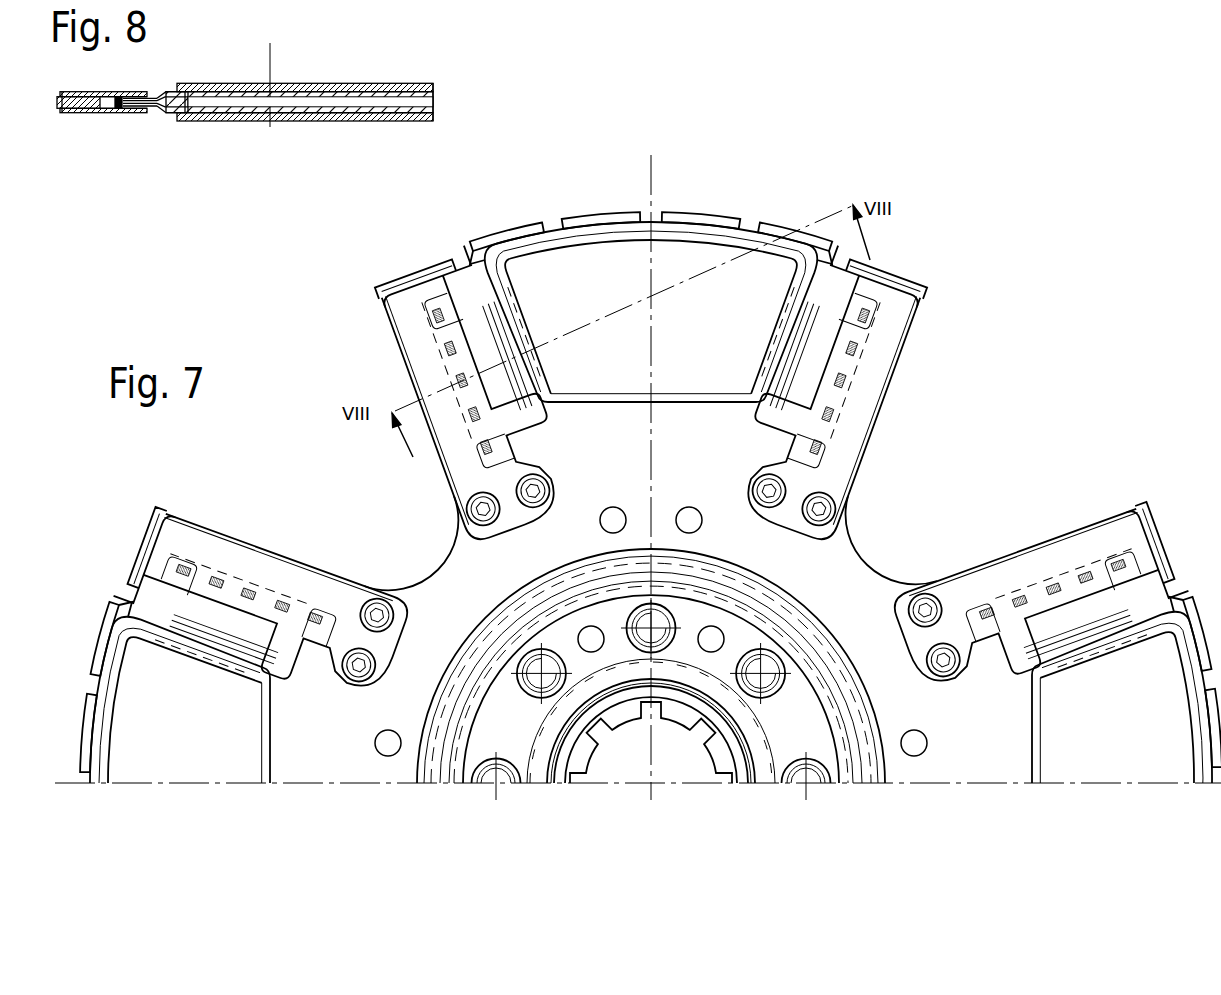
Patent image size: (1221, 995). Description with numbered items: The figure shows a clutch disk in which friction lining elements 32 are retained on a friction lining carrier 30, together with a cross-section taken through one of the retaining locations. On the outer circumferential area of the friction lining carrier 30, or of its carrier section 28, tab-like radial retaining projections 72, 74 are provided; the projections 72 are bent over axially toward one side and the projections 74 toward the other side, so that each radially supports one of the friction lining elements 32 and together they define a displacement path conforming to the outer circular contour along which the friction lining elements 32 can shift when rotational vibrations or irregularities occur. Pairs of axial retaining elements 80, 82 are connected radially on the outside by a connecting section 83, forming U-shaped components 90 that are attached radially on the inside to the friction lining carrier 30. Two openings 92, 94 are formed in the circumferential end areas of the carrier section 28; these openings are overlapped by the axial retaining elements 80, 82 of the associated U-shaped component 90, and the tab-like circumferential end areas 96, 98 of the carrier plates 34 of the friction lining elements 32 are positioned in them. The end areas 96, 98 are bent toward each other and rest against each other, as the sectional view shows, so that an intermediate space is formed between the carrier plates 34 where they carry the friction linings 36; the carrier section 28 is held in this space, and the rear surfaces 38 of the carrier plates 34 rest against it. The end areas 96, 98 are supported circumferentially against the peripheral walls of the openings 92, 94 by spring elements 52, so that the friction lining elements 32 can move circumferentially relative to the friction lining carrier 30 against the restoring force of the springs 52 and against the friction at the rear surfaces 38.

In FIG. 8, the carrier section 28 is at (425, 100).
In FIG. 7, the carrier section 28 is at (700, 412).
In FIG. 7, the friction lining carrier 30 is at (860, 545).
In FIG. 8, the friction lining elements 32 is at (333, 82).
In FIG. 8, the carrier plates 34 is at (166, 90).
In FIG. 7, the carrier plates 34 is at (500, 262).
In FIG. 8, the friction linings 36 is at (239, 84).
In FIG. 8, the rear surfaces 38 is at (393, 120).
In FIG. 7, the spring elements 52 is at (448, 330).
In FIG. 7, the radial retaining projections 72 is at (765, 226).
In FIG. 7, the radial retaining projections 74 is at (694, 212).
In FIG. 8, the axial retaining elements 80 is at (90, 112).
In FIG. 7, the axial retaining elements 80 is at (420, 375).
In FIG. 8, the axial retaining elements 82 is at (108, 92).
In FIG. 7, the axial retaining elements 82 is at (880, 382).
In FIG. 7, the connecting section 83 is at (908, 262).
In FIG. 7, the U-shaped components 90 is at (920, 302).
In FIG. 7, the openings 92 is at (428, 307).
In FIG. 7, the openings 94 is at (793, 253).
In FIG. 8, the tab-like circumferential end areas 96 is at (140, 112).
In FIG. 7, the tab-like circumferential end areas 96 is at (457, 332).
In FIG. 8, the tab-like circumferential end areas 98 is at (130, 95).
In FIG. 7, the tab-like circumferential end areas 98 is at (837, 323).